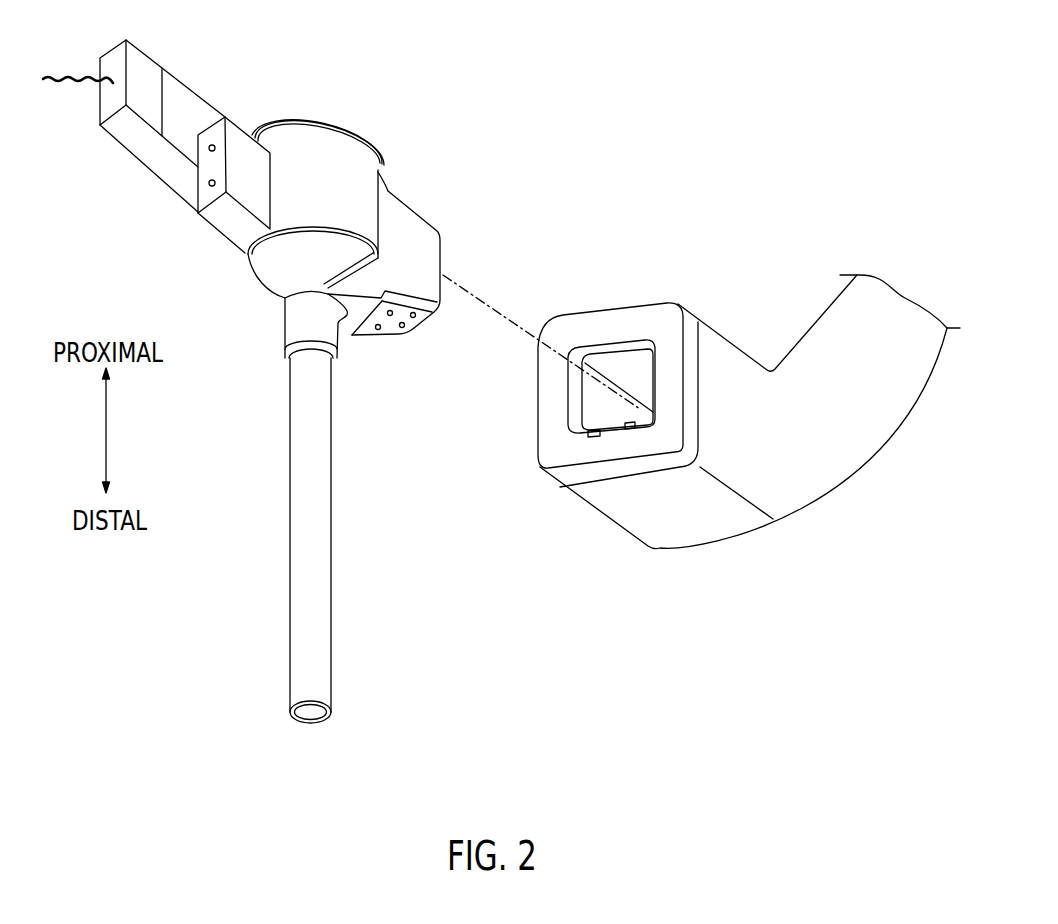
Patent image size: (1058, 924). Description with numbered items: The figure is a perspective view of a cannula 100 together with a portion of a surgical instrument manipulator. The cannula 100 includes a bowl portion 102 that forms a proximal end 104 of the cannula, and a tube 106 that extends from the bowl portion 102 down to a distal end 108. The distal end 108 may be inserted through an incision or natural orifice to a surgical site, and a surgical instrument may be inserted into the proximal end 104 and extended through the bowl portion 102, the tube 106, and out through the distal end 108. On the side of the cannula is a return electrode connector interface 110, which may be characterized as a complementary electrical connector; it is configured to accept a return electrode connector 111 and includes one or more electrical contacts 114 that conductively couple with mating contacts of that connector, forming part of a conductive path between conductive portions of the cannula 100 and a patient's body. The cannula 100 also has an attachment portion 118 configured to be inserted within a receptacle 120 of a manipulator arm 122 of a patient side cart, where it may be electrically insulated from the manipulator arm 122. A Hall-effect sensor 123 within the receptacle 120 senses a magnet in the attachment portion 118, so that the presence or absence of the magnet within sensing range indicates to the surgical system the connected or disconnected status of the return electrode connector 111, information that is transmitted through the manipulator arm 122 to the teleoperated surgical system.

The cannula 100 is at (444, 64).
The bowl portion 102 is at (265, 265).
The proximal end 104 is at (316, 97).
The tube 106 is at (302, 491).
The distal end 108 is at (225, 734).
The return electrode connector interface 110 is at (243, 130).
The return electrode connector 111 is at (143, 57).
The electrical contacts 114 is at (210, 185).
The attachment portion 118 is at (397, 203).
The receptacle 120 is at (621, 347).
The manipulator arm 122 is at (843, 467).
The Hall-effect sensor 123 is at (593, 437).